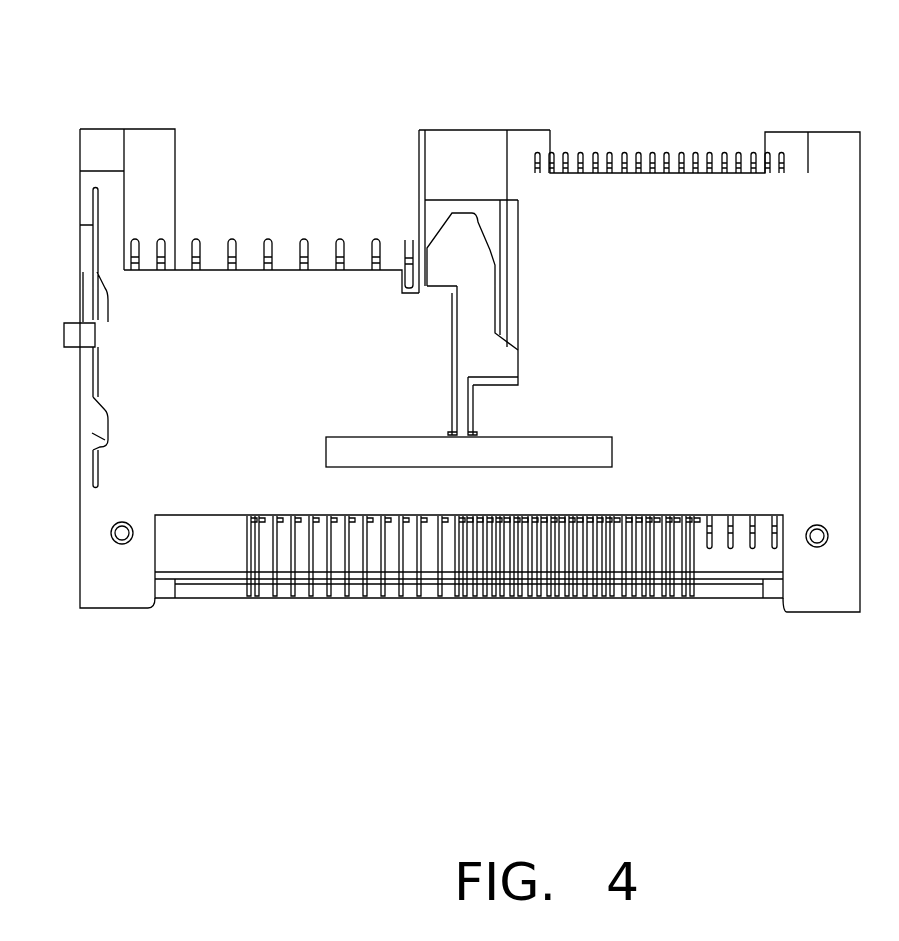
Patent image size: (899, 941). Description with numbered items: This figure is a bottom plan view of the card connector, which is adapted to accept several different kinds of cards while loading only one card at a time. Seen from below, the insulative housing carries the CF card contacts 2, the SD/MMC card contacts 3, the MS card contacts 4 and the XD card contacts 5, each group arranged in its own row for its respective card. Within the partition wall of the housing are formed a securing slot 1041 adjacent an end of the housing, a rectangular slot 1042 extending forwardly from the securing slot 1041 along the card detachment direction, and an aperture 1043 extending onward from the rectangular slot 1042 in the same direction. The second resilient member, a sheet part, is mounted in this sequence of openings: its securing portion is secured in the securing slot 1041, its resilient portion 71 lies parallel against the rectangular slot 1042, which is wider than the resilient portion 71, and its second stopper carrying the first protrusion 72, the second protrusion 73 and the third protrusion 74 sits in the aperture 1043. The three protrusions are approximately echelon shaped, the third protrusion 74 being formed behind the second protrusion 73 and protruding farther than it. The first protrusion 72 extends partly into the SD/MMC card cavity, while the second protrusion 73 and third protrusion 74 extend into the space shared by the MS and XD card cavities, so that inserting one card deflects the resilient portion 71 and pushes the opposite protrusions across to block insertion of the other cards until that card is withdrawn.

The CF card contacts 2 is at (257, 592).
The SD/MMC card contacts 3 is at (195, 243).
The MS card contacts 4 is at (768, 547).
The XD card contacts 5 is at (722, 152).
The resilient portion 71 is at (463, 413).
The first protrusion 72 is at (440, 245).
The second protrusion 73 is at (489, 245).
The third protrusion 74 is at (510, 338).
The securing slot 1041 is at (452, 380).
The rectangular slot 1042 is at (468, 412).
The aperture 1043 is at (437, 210).